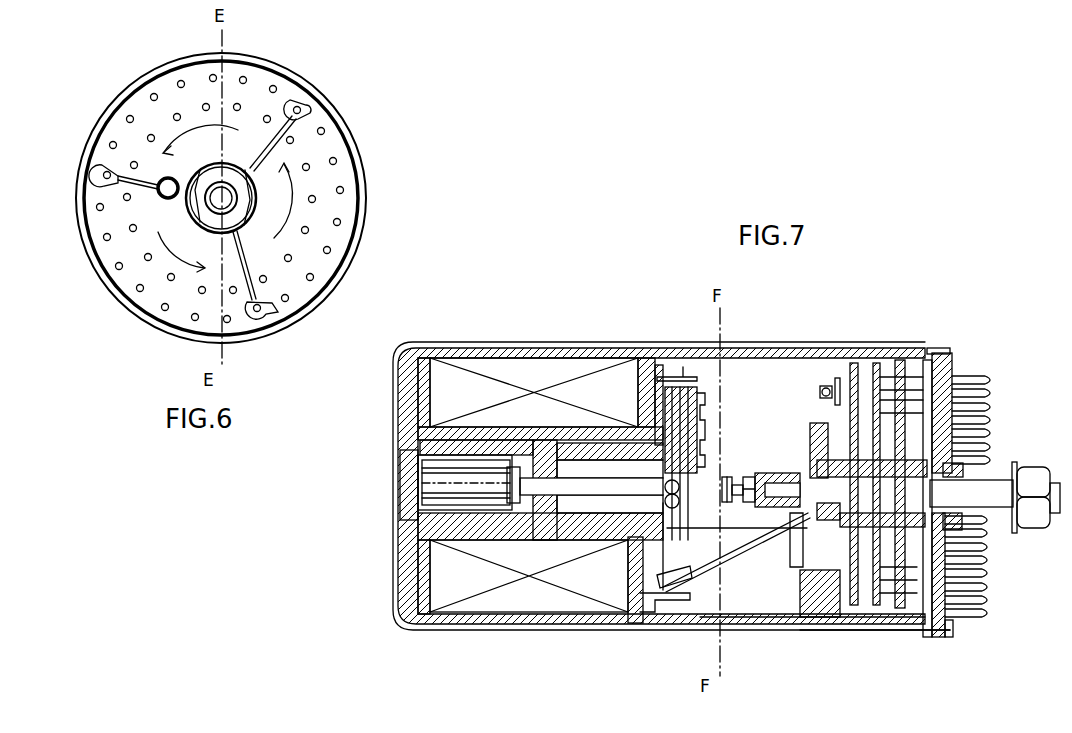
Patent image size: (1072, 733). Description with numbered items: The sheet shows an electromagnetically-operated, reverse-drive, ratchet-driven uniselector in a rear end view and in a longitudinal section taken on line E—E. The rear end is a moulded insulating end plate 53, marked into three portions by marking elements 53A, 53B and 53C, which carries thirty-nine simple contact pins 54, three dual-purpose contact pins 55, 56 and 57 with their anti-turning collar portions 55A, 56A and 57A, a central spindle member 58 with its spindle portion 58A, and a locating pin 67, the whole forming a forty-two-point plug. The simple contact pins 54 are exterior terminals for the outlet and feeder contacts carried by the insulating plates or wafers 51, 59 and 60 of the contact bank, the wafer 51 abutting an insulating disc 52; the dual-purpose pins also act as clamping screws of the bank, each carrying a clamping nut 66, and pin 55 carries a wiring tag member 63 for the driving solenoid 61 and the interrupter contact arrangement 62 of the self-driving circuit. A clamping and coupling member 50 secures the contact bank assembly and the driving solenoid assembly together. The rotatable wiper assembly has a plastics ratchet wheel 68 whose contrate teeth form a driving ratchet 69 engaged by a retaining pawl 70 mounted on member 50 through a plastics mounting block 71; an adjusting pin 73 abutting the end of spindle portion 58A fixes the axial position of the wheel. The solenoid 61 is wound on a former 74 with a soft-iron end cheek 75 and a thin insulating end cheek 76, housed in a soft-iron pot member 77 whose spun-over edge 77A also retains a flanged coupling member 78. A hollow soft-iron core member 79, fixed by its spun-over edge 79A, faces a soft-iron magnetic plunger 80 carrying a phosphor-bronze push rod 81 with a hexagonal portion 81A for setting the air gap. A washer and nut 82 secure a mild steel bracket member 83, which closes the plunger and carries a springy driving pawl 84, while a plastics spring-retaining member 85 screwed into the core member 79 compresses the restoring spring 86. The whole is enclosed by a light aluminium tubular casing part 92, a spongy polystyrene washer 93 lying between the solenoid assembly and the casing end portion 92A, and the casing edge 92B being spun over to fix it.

In FIG. 7, the clamping and coupling member 50 is at (838, 617).
In FIG. 7, the insulating plate or wafer 51 is at (924, 357).
In FIG. 7, the insulating disc 52 is at (952, 363).
In FIG. 6, the moulded insulating end plate 53 is at (221, 198).
In FIG. 7, the moulded insulating end plate 53 is at (950, 397).
In FIG. 6, the marking element 53A is at (282, 128).
In FIG. 6, the marking element 53B is at (163, 192).
In FIG. 6, the marking element 53C is at (250, 287).
In FIG. 6, the simple contact pins 54 is at (246, 80).
In FIG. 7, the simple contact pins 54 is at (985, 378).
In FIG. 6, the dual-purpose contact pin 55 is at (302, 110).
In FIG. 7, the dual-purpose contact pin 55 is at (818, 397).
In FIG. 6, the collar portion 55A is at (300, 105).
In FIG. 6, the dual-purpose contact pin 56 is at (102, 177).
In FIG. 6, the collar portion 56A is at (105, 170).
In FIG. 6, the dual-purpose contact pin 57 is at (257, 318).
In FIG. 6, the collar portion 57A is at (263, 313).
In FIG. 6, the spindle member 58 is at (212, 202).
In FIG. 7, the spindle member 58 is at (982, 492).
In FIG. 7, the spindle portion 58A is at (797, 483).
In FIG. 7, the insulating plate or wafer 59 is at (897, 362).
In FIG. 7, the insulating plate or wafer 60 is at (873, 390).
In FIG. 7, the driving solenoid 61 is at (510, 372).
In FIG. 7, the interrupter contact arrangement 62 is at (697, 400).
In FIG. 7, the wiring tag member 63 is at (838, 392).
In FIG. 7, the clamping nut 66 is at (827, 395).
In FIG. 6, the locating pin 67 is at (205, 203).
In FIG. 7, the ratchet wheel 68 is at (822, 422).
In FIG. 7, the driving ratchet 69 is at (813, 437).
In FIG. 7, the retaining pawl 70 is at (803, 557).
In FIG. 7, the mounting block 71 is at (810, 600).
In FIG. 7, the adjusting pin 73 is at (765, 488).
In FIG. 7, the former 74 is at (432, 370).
In FIG. 7, the soft-iron end cheek 75 is at (643, 360).
In FIG. 7, the thin insulating end cheek 76 is at (640, 377).
In FIG. 7, the soft-iron pot member 77 is at (493, 607).
In FIG. 7, the spun-over edge 77A is at (657, 357).
In FIG. 7, the flanged coupling member 78 is at (677, 600).
In FIG. 7, the core member 79 is at (487, 520).
In FIG. 7, the spun-over edge 79A is at (420, 437).
In FIG. 7, the magnetic plunger 80 is at (583, 527).
In FIG. 7, the push rod 81 is at (633, 488).
In FIG. 7, the hexagonal section portion 81A is at (530, 490).
In FIG. 7, the nut 82 is at (676, 503).
In FIG. 7, the bracket member 83 is at (666, 545).
In FIG. 7, the driving pawl 84 is at (737, 557).
In FIG. 7, the spring-retaining member 85 is at (510, 480).
In FIG. 7, the spring 86 is at (430, 497).
In FIG. 7, the tubular casing part 92 is at (880, 633).
In FIG. 7, the end portion 92A is at (395, 372).
In FIG. 7, the edge 92B is at (940, 350).
In FIG. 7, the spongy polystyrene washer 93 is at (400, 405).